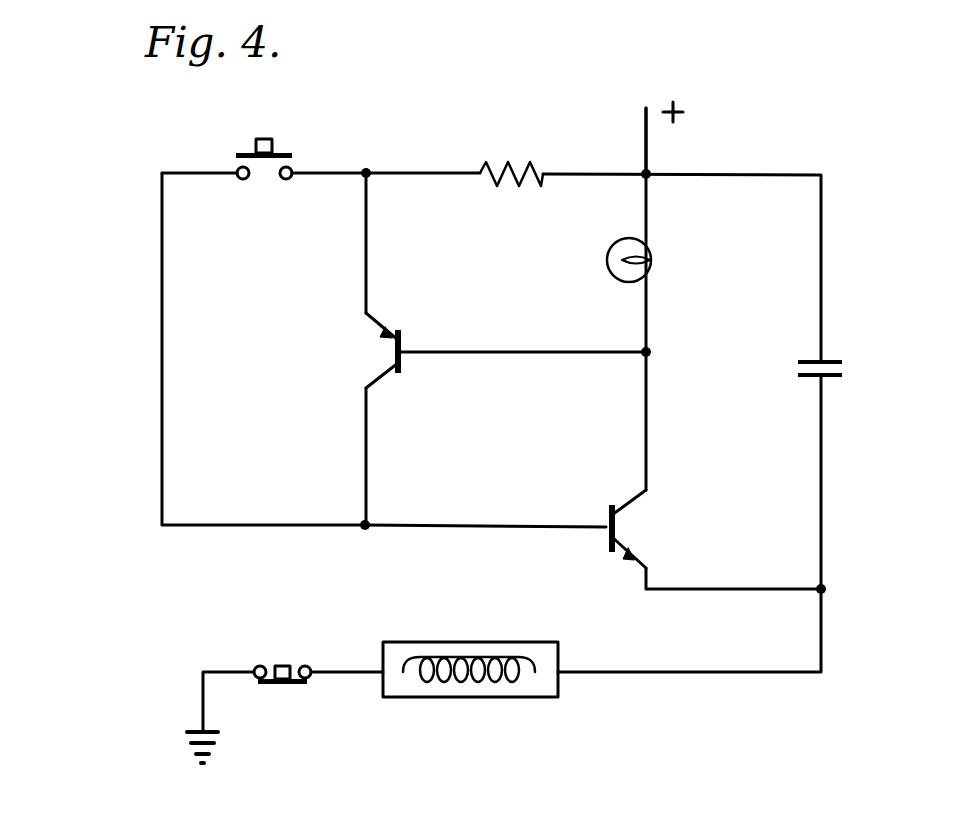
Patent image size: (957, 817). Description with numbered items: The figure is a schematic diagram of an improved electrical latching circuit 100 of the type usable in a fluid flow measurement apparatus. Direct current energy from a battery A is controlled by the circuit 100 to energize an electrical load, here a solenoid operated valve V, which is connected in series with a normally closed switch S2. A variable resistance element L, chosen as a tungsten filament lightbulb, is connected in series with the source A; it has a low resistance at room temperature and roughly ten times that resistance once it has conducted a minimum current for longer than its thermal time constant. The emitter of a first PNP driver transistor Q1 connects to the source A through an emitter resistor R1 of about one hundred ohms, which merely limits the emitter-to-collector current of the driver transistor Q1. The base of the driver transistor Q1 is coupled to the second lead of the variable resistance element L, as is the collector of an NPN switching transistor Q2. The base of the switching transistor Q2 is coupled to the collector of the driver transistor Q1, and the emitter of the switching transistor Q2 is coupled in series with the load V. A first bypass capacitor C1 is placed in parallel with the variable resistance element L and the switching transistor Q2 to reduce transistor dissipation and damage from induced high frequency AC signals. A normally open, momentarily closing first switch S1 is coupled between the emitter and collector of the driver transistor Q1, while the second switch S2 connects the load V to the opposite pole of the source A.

The electrical latching circuit 100 is at (133, 348).
The first switch S1 is at (285, 201).
The emitter resistor R1 is at (511, 191).
The battery A is at (630, 86).
The variable resistance element L is at (621, 253).
The first PNP driver transistor Q1 is at (408, 345).
The NPN switching transistor Q2 is at (601, 525).
The first bypass capacitor C1 is at (794, 368).
The second switch S2 is at (313, 631).
The solenoid operated valve V is at (480, 607).